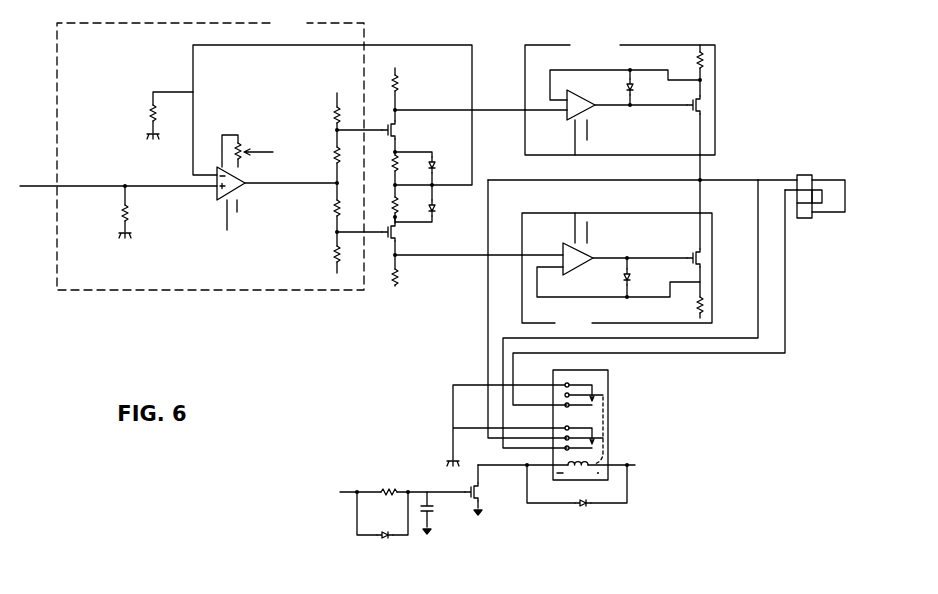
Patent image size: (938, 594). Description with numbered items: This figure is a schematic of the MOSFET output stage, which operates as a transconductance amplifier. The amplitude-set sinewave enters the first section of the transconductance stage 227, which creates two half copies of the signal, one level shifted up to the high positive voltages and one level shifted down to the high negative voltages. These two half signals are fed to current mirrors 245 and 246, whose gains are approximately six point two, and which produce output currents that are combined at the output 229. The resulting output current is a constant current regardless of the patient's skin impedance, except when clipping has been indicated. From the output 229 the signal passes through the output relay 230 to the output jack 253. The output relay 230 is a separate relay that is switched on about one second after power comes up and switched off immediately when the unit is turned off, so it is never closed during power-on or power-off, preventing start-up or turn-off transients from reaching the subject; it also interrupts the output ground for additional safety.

The first section of the transconductance stage 227 is at (272, 153).
The current mirror 245 is at (620, 99).
The current mirror 246 is at (617, 273).
The output 229 is at (705, 172).
The output relay 230 is at (619, 417).
The output jack 253 is at (816, 187).